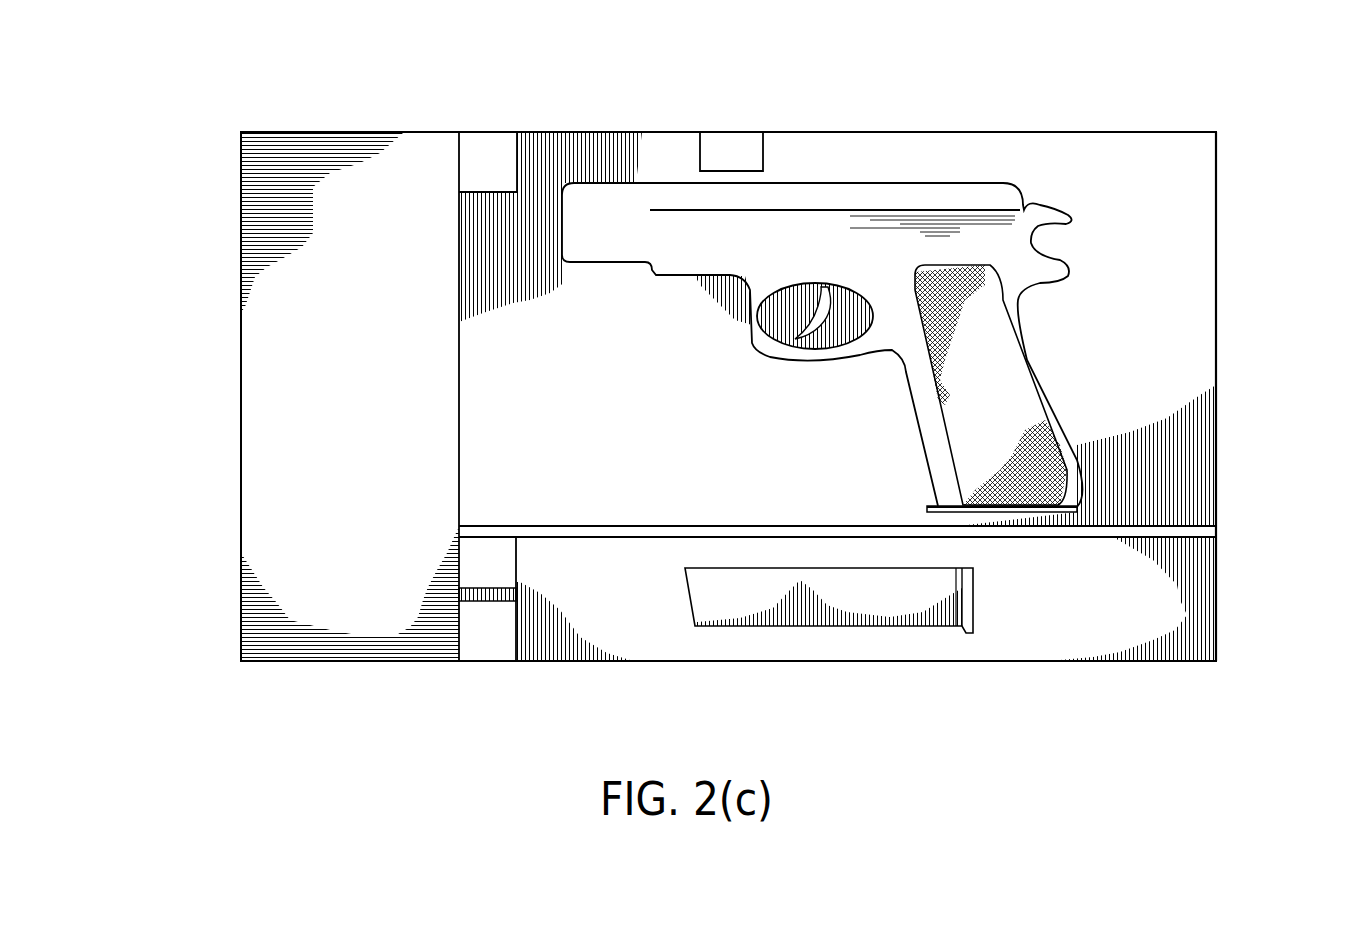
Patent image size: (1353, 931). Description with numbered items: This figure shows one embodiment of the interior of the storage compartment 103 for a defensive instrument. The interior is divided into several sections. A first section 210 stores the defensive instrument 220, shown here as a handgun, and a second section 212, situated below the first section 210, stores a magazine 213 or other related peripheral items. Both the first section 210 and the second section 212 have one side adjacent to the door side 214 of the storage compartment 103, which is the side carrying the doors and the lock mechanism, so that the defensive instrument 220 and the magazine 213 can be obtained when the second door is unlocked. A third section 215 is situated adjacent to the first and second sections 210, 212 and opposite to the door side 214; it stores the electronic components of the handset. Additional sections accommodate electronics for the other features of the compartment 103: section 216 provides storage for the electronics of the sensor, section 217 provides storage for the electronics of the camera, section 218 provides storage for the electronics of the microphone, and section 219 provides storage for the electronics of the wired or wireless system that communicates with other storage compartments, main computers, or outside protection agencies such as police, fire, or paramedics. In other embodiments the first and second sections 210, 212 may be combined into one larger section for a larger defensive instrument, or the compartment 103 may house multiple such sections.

The storage compartment 103 is at (322, 708).
The first section 210 is at (1165, 363).
The second section 212 is at (1178, 598).
The magazine 213 is at (815, 608).
The door side 214 is at (1220, 298).
The third section 215 is at (285, 313).
The section 216 is at (493, 148).
The section 217 is at (730, 150).
The section 218 is at (480, 632).
The section 219 is at (497, 560).
The defensive instrument 220 is at (975, 197).